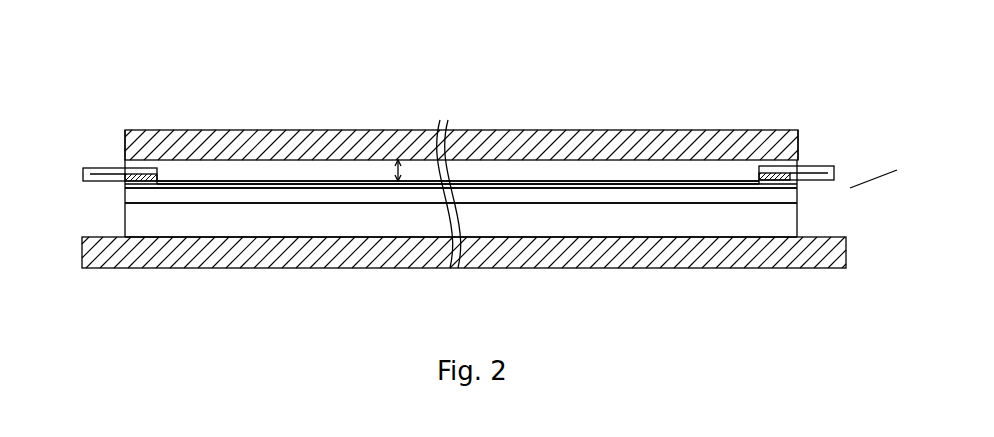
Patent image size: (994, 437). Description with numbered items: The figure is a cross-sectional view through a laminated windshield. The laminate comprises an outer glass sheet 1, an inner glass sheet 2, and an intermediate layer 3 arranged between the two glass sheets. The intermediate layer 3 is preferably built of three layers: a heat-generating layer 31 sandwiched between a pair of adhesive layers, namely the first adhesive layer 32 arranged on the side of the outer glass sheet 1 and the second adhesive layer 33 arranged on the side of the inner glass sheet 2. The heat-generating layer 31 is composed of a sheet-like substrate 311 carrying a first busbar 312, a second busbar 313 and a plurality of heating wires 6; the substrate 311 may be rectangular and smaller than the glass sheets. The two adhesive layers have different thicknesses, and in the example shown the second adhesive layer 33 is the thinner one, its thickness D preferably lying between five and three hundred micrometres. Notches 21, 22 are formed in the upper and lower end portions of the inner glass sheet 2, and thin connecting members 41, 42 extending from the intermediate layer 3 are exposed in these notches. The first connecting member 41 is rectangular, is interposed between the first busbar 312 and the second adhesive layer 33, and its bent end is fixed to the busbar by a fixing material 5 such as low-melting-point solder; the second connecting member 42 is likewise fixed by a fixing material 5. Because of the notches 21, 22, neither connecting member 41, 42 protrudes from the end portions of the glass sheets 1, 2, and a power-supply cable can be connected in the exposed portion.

The outer glass sheet 1 is at (650, 260).
The inner glass sheet 2 is at (585, 132).
The intermediate layer 3 is at (833, 189).
The fixing material 5 is at (128, 182).
The heating wires 6 is at (283, 181).
The first notch 21 is at (799, 143).
The second notch 22 is at (124, 142).
The heat-generating layer 31 is at (473, 168).
The first adhesive layer 32 is at (237, 222).
The second adhesive layer 33 is at (226, 173).
The first connecting member 41 is at (815, 164).
The second connecting member 42 is at (102, 167).
The substrate 311 is at (350, 196).
The first busbar 312 is at (768, 187).
The second busbar 313 is at (157, 190).
The thickness of the thinner adhesive layer D is at (396, 174).